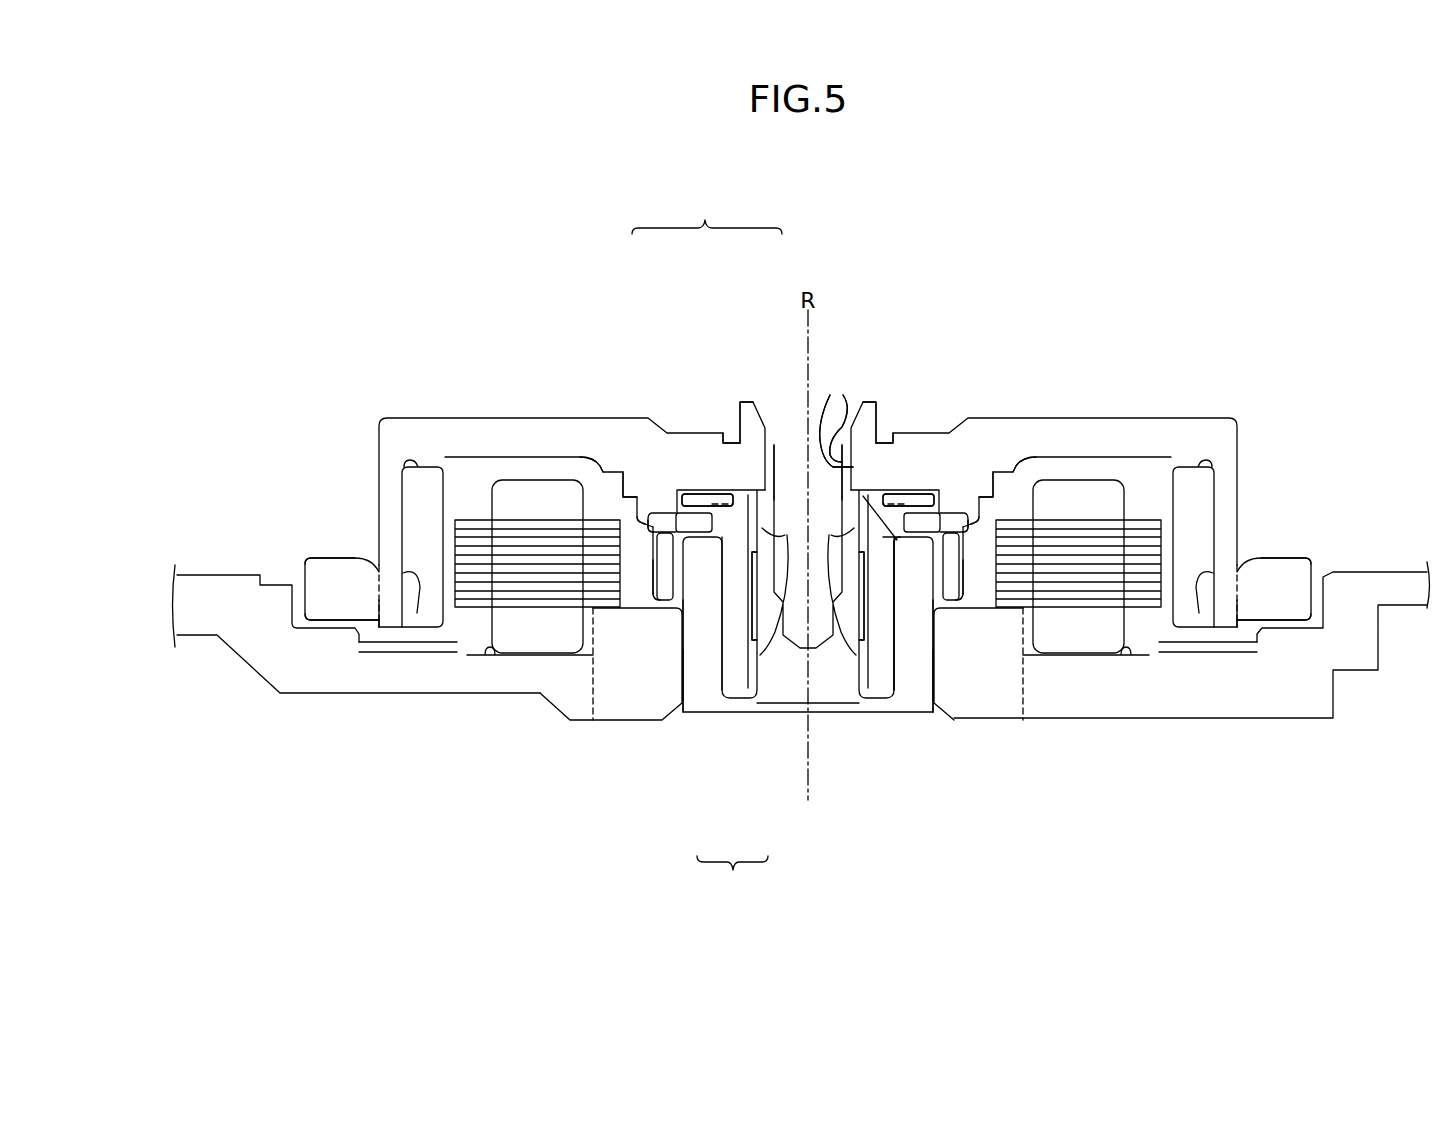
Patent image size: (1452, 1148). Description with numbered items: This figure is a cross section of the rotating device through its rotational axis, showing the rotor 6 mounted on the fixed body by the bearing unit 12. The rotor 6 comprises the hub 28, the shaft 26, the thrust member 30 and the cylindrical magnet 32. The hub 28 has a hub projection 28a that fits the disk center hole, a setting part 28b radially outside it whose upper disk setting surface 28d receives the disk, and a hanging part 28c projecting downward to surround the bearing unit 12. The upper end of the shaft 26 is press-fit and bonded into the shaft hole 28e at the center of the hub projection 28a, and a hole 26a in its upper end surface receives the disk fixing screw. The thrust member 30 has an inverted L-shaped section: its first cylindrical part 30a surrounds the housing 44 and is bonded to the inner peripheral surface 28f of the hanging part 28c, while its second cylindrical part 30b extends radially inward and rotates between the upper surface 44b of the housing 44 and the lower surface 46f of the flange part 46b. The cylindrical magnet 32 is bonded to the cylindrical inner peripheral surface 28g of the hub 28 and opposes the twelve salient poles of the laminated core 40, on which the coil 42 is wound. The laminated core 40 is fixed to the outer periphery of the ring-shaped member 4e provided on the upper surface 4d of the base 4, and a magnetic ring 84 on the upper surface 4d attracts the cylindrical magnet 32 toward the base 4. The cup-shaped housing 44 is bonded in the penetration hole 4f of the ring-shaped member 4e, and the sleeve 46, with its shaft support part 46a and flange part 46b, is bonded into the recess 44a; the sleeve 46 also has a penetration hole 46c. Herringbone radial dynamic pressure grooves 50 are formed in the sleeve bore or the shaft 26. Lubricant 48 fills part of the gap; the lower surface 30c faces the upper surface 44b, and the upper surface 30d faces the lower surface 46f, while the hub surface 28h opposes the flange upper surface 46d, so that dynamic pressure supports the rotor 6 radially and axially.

The base 4 is at (1358, 658).
The upper surface of the base 4d is at (485, 650).
The ring-shaped member 4e is at (618, 695).
The penetration hole 4f is at (690, 692).
The rotor 6 is at (707, 212).
The bearing unit 12 is at (732, 877).
The shaft 26 is at (786, 428).
The hole 26a is at (838, 445).
The hub 28 is at (548, 432).
The hub projection 28a is at (388, 610).
The setting part 28b is at (322, 607).
The hanging part 28c is at (603, 490).
The disk setting surface 28d is at (340, 556).
The shaft hole 28e is at (833, 420).
The inner peripheral surface of the hanging part 28f is at (603, 468).
The cylindrical inner peripheral surface of the hub 28g is at (417, 613).
The surface of the hub opposing the flange upper surface 28h is at (717, 430).
The thrust member 30 is at (772, 498).
The first cylindrical part 30a is at (665, 602).
The second cylindrical part 30b is at (658, 510).
The lower surface of the second cylindrical part 30c is at (700, 540).
The upper surface of the second cylindrical part 30d is at (706, 505).
The cylindrical magnet 32 is at (433, 493).
The laminated core 40 is at (470, 590).
The coil 42 is at (550, 620).
The housing 44 is at (710, 692).
The recess 44a is at (893, 692).
The upper surface of the housing 44b is at (703, 545).
The sleeve 46 is at (724, 695).
The shaft support part 46a is at (748, 692).
The flange part 46b is at (683, 515).
The penetration hole 46c is at (880, 500).
The upper surface of the flange part 46d is at (730, 490).
The lower surface of the flange part 46f is at (695, 513).
The lubricant 48 is at (652, 515).
The radial dynamic pressure grooves 50 is at (808, 521).
The magnetic ring 84 is at (373, 648).